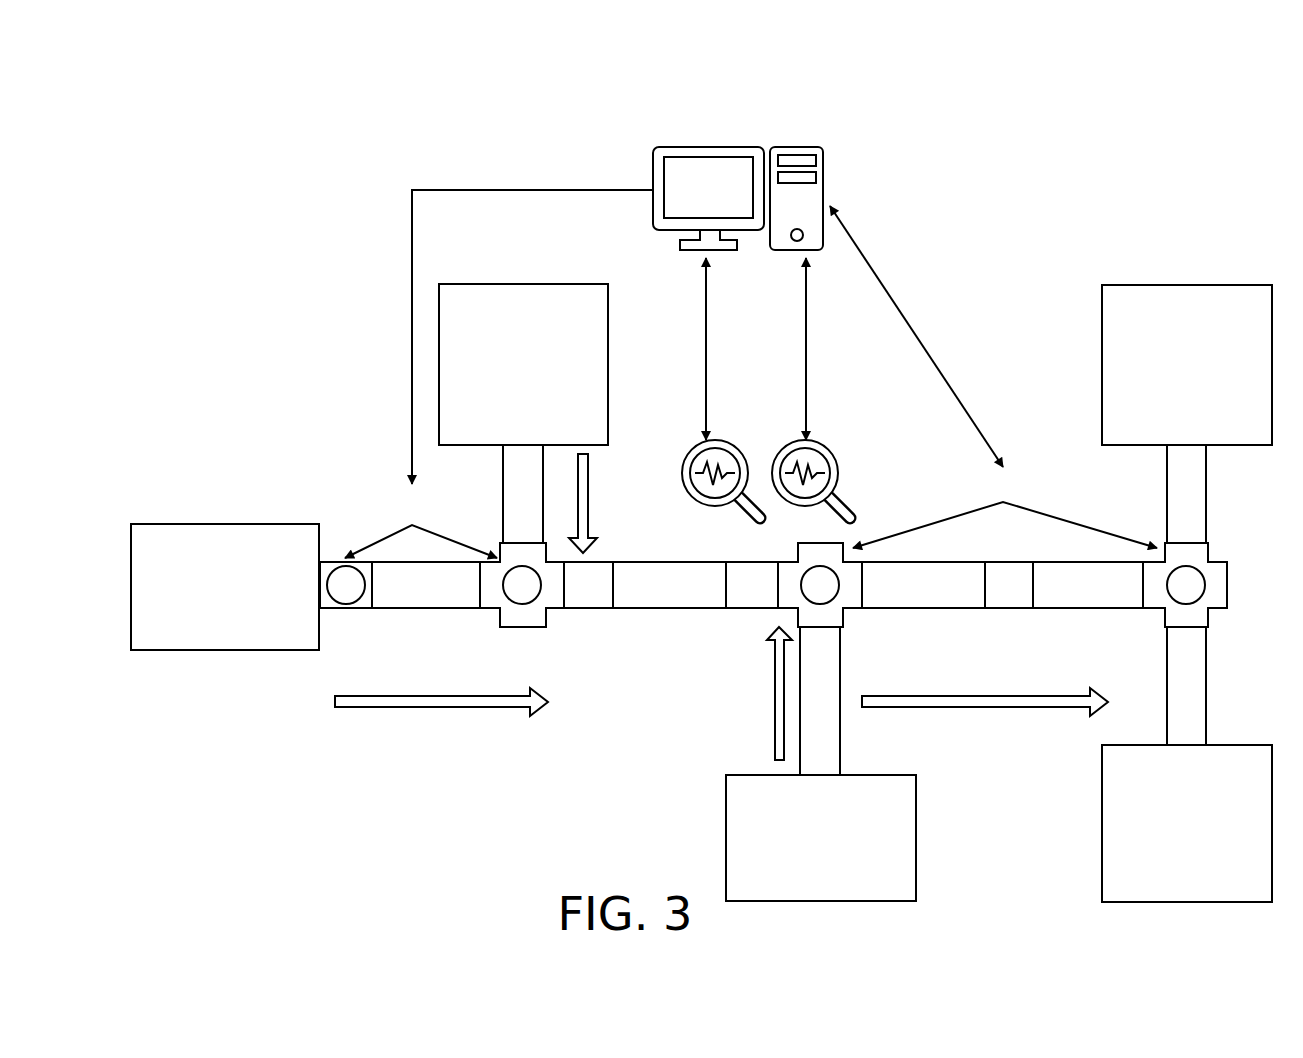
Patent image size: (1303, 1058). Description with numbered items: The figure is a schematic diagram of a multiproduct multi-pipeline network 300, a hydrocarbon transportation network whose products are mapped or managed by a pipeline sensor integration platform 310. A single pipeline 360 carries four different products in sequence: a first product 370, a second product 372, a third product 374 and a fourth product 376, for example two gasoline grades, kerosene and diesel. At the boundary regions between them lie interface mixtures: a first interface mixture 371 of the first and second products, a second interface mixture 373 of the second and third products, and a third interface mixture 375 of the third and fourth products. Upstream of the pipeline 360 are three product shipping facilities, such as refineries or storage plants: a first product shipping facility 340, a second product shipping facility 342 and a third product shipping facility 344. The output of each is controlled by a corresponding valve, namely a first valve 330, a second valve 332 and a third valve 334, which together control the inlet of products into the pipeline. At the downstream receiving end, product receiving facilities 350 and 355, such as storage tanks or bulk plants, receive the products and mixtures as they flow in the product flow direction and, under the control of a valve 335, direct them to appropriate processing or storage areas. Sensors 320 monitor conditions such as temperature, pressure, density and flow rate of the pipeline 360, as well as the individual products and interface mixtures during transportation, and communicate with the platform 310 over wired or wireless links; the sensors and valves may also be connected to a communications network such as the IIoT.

The multiproduct multi-pipeline network 300 is at (701, 458).
The pipeline sensor integration platform 310 is at (767, 130).
The sensors 320 is at (782, 440).
The first valve 330 is at (347, 549).
The second valve 332 is at (513, 560).
The third valve 334 is at (920, 530).
The valve 335 is at (1088, 530).
The first product shipping facility 340 is at (225, 522).
The second product shipping facility 342 is at (565, 283).
The third product shipping facility 344 is at (726, 822).
The product receiving facility 350 is at (1140, 283).
The product receiving facility 355 is at (1100, 825).
The pipeline 360 is at (773, 609).
The first product 370 is at (435, 612).
The first interface mixture 371 is at (585, 612).
The second product 372 is at (660, 612).
The second interface mixture 373 is at (740, 625).
The third product 374 is at (915, 612).
The third interface mixture 375 is at (1013, 612).
The fourth product 376 is at (1070, 612).